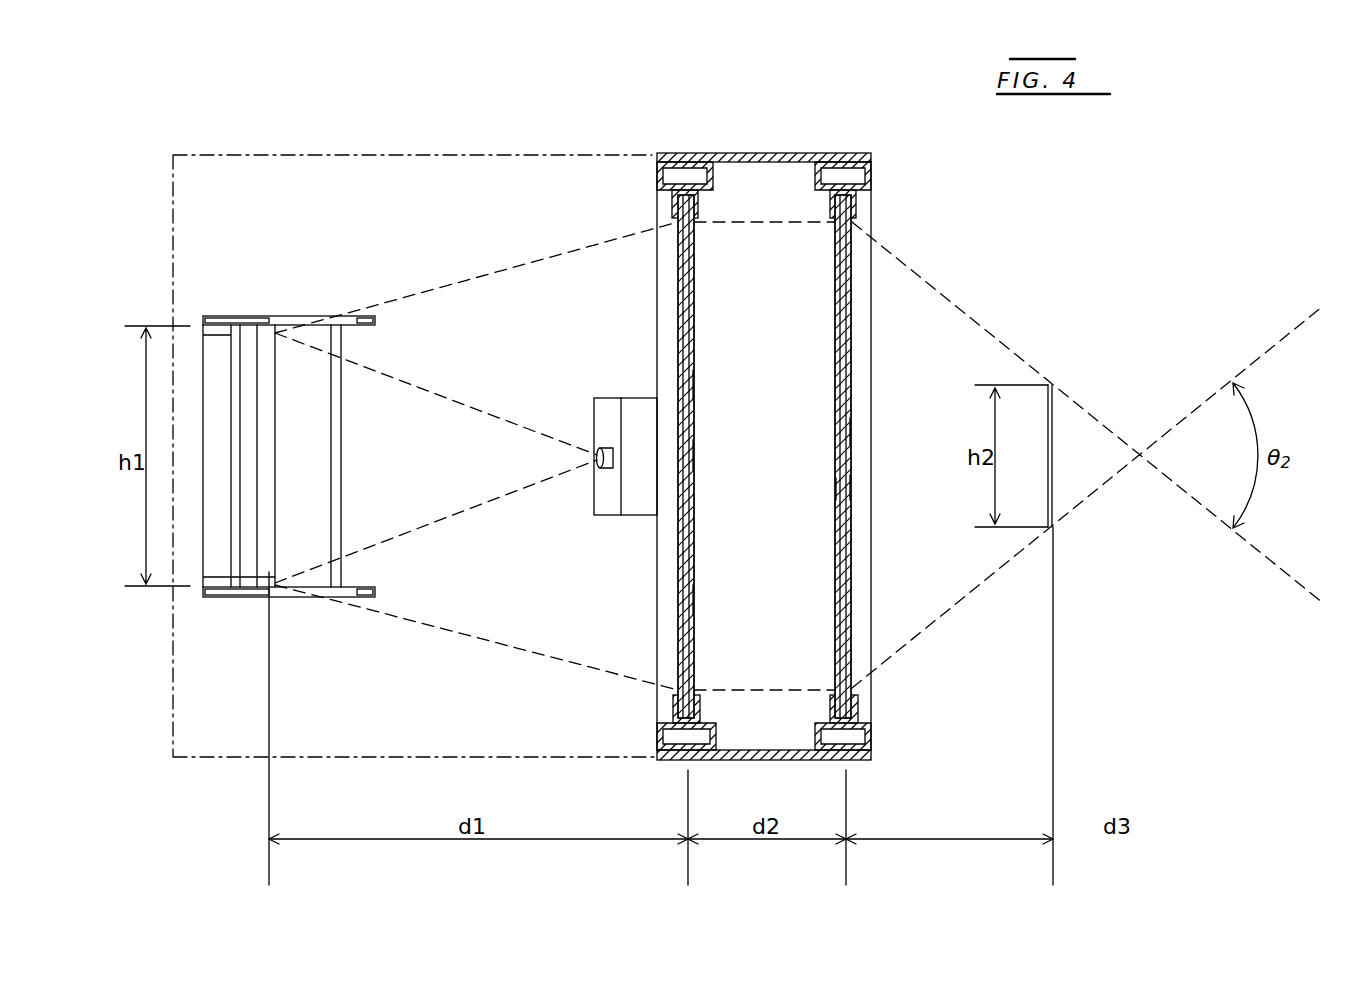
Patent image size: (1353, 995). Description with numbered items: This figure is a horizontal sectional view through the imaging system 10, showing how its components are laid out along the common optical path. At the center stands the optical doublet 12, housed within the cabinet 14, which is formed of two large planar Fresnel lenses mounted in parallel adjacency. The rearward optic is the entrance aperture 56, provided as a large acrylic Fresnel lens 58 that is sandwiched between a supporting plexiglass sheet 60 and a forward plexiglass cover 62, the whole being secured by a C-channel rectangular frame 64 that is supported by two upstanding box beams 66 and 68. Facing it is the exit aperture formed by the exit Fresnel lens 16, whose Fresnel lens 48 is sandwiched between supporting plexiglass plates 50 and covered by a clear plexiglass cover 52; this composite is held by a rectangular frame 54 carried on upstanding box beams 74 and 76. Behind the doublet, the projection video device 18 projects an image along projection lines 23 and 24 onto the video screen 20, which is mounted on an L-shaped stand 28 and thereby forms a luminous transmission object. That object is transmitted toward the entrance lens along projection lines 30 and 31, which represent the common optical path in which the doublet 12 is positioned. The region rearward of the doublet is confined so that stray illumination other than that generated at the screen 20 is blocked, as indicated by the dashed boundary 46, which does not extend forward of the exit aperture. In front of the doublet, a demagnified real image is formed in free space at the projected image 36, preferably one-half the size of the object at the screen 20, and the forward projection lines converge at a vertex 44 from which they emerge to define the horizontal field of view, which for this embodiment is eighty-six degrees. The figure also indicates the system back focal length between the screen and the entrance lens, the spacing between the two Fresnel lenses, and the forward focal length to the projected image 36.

The imaging system 10 is at (815, 86).
The optical doublet 12 is at (892, 117).
The cabinet 14 is at (868, 153).
The exit Fresnel lens 16 is at (870, 274).
The projection video device 18 is at (629, 516).
The video screen 20 is at (289, 454).
The projection line 23 is at (446, 518).
The projection line 24 is at (446, 396).
The L-shaped stand 28 is at (288, 316).
The projection line 30 is at (490, 273).
The projection line 31 is at (437, 628).
The projected image 36 is at (1053, 455).
The vertex 44 is at (1138, 450).
The dashed boundary 46 is at (482, 153).
The Fresnel lens 48 is at (846, 432).
The supporting plexiglass plates 50 is at (836, 490).
The clear plexiglass cover 52 is at (851, 487).
The rectangular frame 54 is at (863, 212).
The entrance aperture 56 is at (660, 321).
The Fresnel lens 58 is at (694, 386).
The supporting plexiglass sheet 60 is at (694, 456).
The forward plexiglass cover 62 is at (680, 600).
The rectangular frame 64 is at (665, 214).
The box beam 66 is at (660, 737).
The box beam 68 is at (650, 172).
The box beam 74 is at (873, 736).
The box beam 76 is at (872, 175).